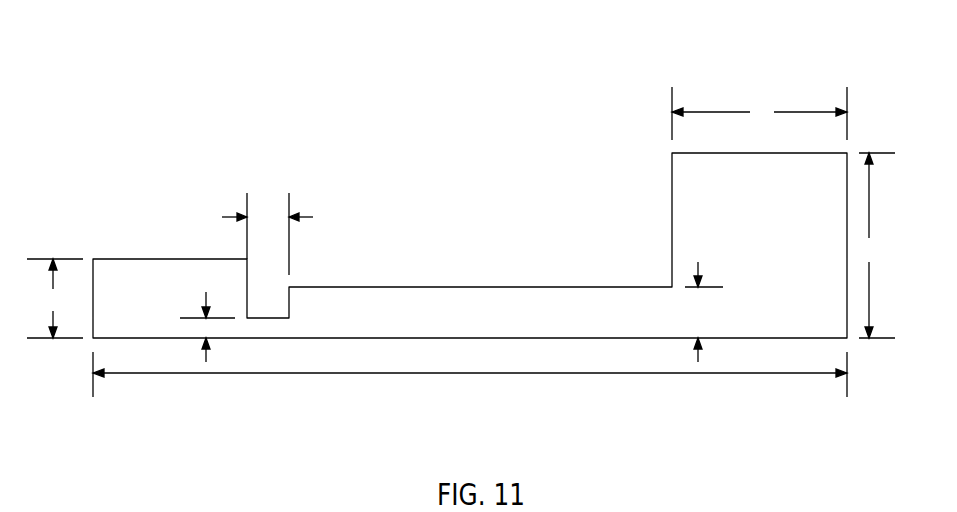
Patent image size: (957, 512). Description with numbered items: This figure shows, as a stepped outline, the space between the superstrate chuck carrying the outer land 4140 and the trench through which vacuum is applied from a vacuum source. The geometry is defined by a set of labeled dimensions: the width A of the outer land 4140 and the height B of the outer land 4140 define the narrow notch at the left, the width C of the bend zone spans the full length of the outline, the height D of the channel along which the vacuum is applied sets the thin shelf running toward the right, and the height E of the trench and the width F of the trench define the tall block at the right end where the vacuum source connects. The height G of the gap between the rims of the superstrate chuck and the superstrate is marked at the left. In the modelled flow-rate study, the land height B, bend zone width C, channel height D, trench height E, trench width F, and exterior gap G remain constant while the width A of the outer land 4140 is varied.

The outer land 4140 is at (470, 245).
The width of the outer land A is at (267, 234).
The height of the outer land B is at (207, 315).
The width of the bend zone C is at (470, 374).
The height of the channel D is at (704, 298).
The height of the trench E is at (877, 245).
The width of the trench F is at (759, 113).
The height of the gap G is at (55, 298).